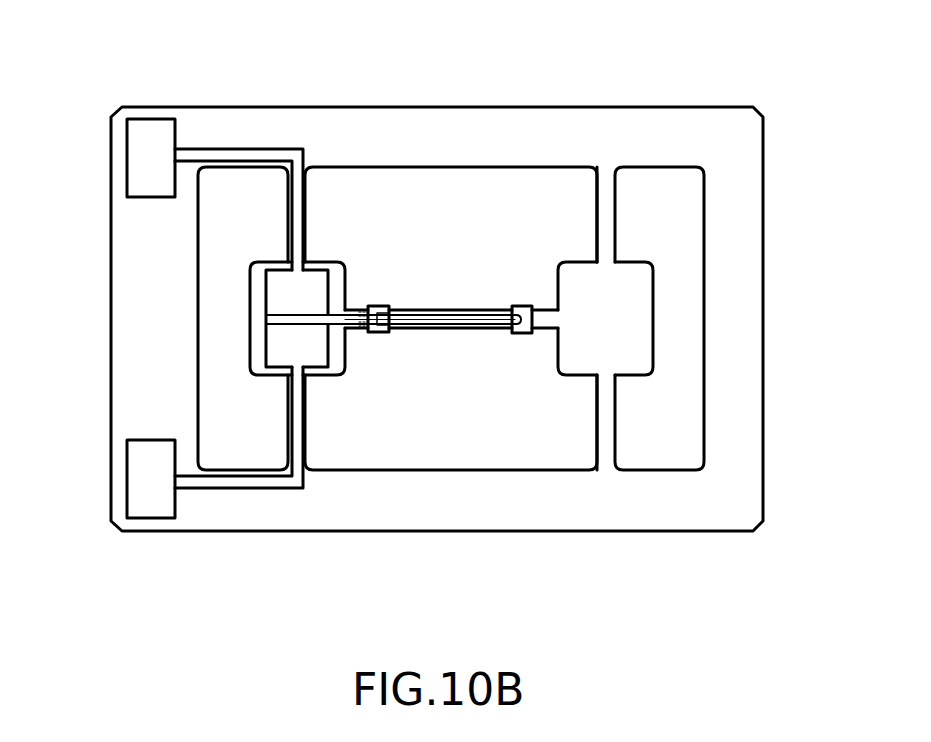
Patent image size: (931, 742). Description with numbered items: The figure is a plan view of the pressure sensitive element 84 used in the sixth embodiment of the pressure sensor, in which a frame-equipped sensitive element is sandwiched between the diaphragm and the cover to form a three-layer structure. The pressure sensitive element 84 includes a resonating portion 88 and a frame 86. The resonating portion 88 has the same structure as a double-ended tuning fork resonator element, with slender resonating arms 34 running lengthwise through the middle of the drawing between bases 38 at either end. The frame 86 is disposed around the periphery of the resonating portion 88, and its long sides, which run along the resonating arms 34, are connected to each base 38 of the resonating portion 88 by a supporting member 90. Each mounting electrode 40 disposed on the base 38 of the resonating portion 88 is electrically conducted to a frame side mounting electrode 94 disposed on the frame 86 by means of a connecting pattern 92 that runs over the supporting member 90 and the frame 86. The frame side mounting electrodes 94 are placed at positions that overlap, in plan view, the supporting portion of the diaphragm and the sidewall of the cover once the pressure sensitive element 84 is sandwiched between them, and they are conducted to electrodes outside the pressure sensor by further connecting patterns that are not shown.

The pressure sensitive element 84 is at (669, 105).
The frame 86 is at (373, 150).
The frame side mounting electrode 94 is at (145, 137).
The connecting pattern 92 is at (233, 146).
The supporting member 90 is at (287, 242).
The base 38 is at (250, 332).
The mounting electrode 40 is at (316, 297).
The resonating arm 34 is at (445, 305).
The resonating portion 88 is at (485, 303).